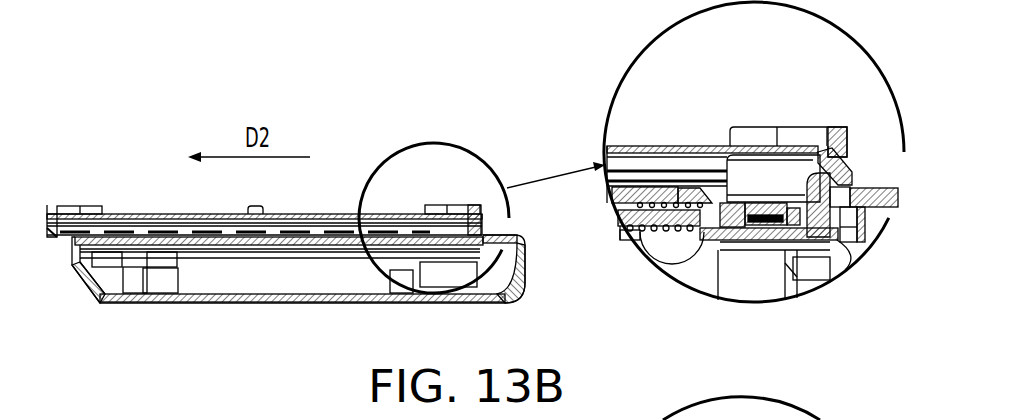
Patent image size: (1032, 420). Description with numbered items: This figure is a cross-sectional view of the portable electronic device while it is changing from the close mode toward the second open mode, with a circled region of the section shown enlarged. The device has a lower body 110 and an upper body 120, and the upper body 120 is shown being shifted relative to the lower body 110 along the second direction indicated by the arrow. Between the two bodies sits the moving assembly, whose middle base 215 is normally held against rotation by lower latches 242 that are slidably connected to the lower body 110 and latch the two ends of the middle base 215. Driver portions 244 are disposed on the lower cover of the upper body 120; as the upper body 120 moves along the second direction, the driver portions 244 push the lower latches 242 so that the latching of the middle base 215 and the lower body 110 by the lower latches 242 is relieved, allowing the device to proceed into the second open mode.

The lower body 110 is at (155, 297).
The upper body 120 is at (118, 220).
The middle base 215 is at (762, 198).
The lower latch 242 is at (668, 200).
The driver portion 244 is at (850, 158).